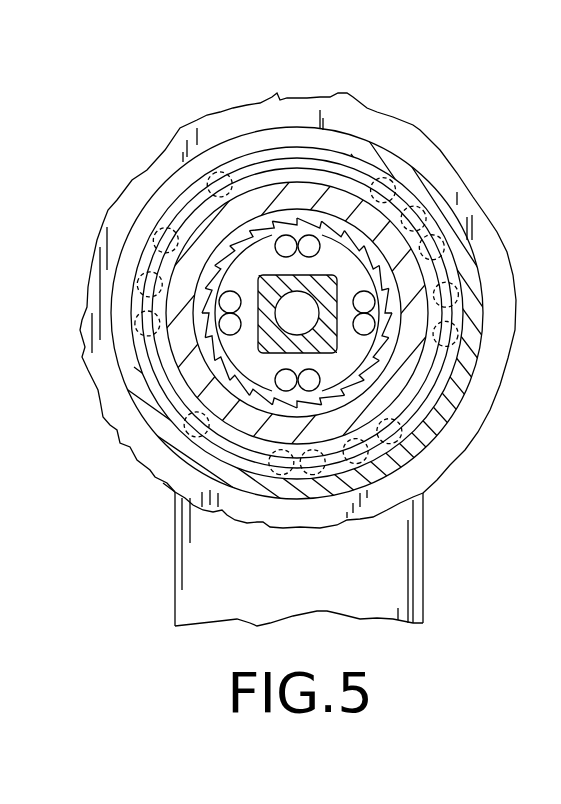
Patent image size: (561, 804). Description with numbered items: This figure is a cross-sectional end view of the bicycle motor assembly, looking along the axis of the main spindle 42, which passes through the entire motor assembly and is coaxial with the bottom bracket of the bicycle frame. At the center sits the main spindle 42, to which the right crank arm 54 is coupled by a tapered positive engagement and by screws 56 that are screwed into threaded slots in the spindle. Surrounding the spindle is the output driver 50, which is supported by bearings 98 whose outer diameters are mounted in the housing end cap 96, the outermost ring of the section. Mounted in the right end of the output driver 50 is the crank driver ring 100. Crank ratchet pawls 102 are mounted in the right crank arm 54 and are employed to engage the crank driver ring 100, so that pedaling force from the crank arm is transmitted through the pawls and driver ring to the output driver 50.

The housing end cap 96 is at (160, 187).
The bearings 98 is at (212, 172).
The output driver 50 is at (277, 188).
The crank driver ring 100 is at (308, 213).
The crank ratchet pawls 102 is at (308, 242).
The screws 56 is at (290, 327).
The main spindle 42 is at (337, 300).
The right crank arm 54 is at (347, 337).